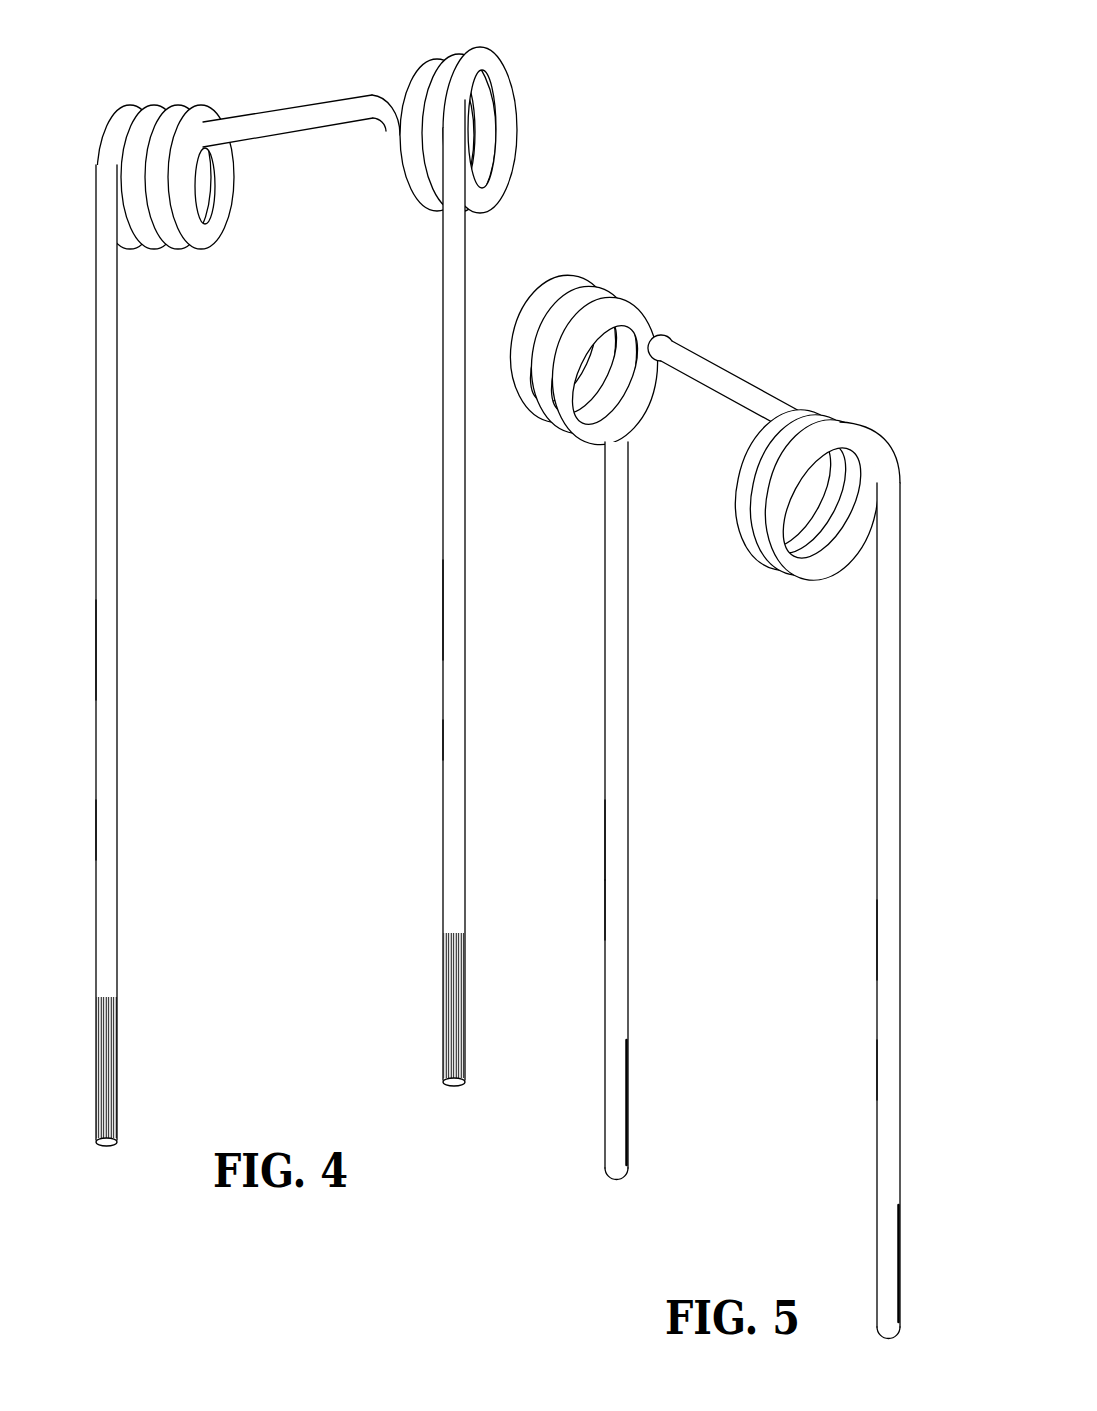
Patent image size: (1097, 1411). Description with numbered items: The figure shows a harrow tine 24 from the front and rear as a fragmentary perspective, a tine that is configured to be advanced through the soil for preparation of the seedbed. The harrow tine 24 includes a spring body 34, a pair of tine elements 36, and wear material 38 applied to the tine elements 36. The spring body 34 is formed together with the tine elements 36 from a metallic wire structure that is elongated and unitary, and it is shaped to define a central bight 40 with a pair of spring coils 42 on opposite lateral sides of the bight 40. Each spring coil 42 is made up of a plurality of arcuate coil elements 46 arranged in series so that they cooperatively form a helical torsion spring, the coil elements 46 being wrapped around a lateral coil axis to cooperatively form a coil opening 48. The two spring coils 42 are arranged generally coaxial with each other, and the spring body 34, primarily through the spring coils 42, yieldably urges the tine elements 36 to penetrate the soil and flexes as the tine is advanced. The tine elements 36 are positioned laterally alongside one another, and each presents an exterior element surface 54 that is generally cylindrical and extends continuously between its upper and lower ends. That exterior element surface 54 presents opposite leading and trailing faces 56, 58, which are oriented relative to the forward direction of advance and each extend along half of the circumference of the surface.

In FIG. 4, the harrow tine 24 is at (118, 68).
In FIG. 5, the harrow tine 24 is at (758, 270).
In FIG. 4, the spring body 34 is at (373, 99).
In FIG. 5, the spring body 34 is at (677, 340).
In FIG. 4, the tine element 36 is at (108, 472).
In FIG. 5, the tine element 36 is at (627, 678).
In FIG. 4, the wear material 38 is at (108, 1048).
In FIG. 5, the wear material 38 is at (628, 1100).
In FIG. 4, the central bight 40 is at (312, 110).
In FIG. 5, the central bight 40 is at (742, 385).
In FIG. 4, the spring coil 42 is at (208, 210).
In FIG. 5, the spring coil 42 is at (592, 355).
In FIG. 4, the coil element 46 is at (122, 116).
In FIG. 5, the coil element 46 is at (580, 440).
In FIG. 4, the coil opening 48 is at (240, 203).
In FIG. 5, the coil opening 48 is at (634, 403).
In FIG. 4, the exterior element surface 54 is at (108, 640).
In FIG. 5, the exterior element surface 54 is at (627, 843).
In FIG. 4, the leading face 56 is at (102, 827).
In FIG. 5, the trailing face 58 is at (605, 908).